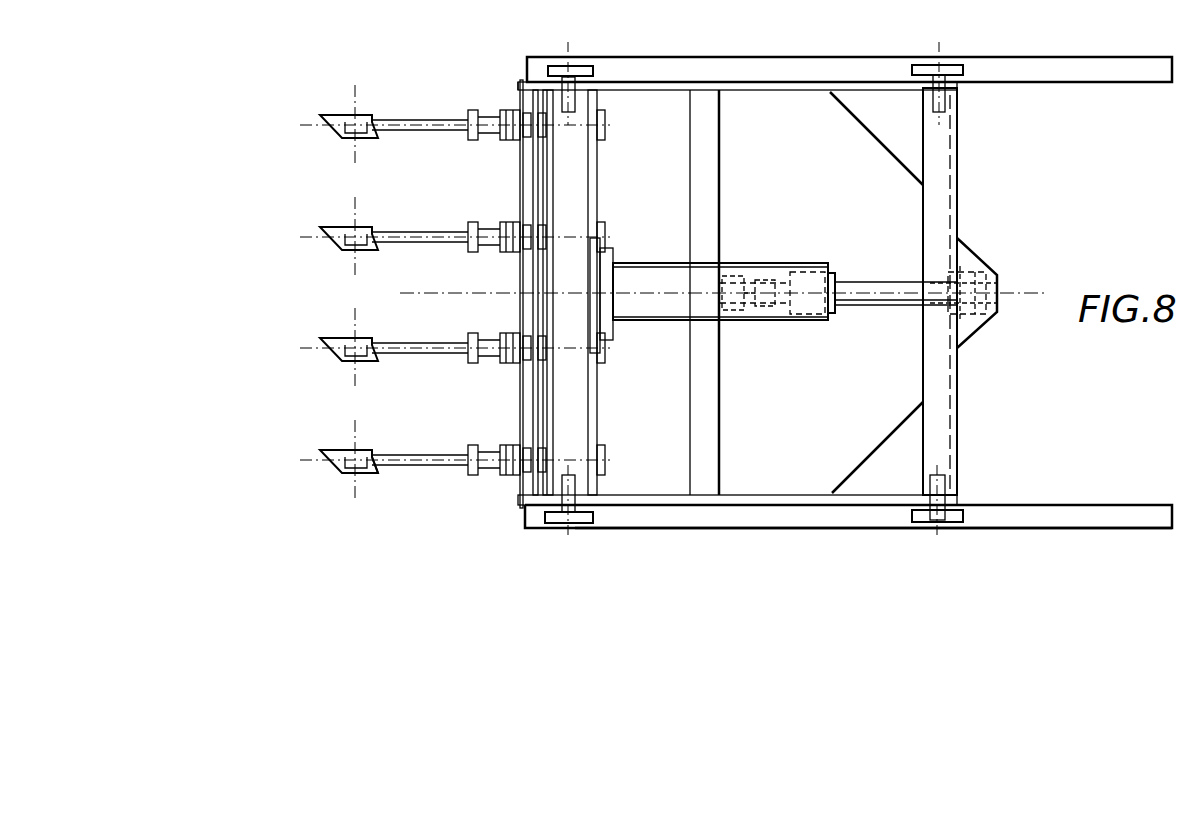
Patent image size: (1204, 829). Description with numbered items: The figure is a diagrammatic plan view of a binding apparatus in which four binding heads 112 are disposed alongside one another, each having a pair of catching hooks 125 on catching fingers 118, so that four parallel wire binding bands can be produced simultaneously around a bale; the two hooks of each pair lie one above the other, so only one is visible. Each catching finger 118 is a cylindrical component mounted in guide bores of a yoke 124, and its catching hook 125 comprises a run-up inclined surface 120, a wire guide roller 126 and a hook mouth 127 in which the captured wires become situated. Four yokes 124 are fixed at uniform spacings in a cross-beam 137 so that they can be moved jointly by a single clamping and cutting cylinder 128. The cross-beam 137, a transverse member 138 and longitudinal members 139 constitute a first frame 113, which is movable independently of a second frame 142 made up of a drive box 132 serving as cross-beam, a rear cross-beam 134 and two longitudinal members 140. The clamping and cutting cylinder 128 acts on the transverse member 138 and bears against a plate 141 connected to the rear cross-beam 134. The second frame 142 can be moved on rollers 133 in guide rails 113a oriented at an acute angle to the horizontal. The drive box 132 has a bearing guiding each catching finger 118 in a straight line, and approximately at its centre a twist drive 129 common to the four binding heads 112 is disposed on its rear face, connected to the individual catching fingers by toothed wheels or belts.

The binding head 112 is at (567, 163).
The first frame 113 is at (847, 369).
The guide rails 113a is at (1130, 510).
The catching finger 118 is at (420, 430).
The run-up inclined surface 120 is at (296, 493).
The yoke 124 is at (518, 482).
The catching hook 125 is at (391, 353).
The wire guide roller 126 is at (355, 516).
The hook mouth 127 is at (403, 509).
The clamping and cutting cylinder 128 is at (862, 284).
The twist drive 129 is at (653, 272).
The drive box 132 is at (565, 405).
The rollers 133 is at (963, 528).
The rear cross-beam 134 is at (938, 384).
The cross-beam 137 is at (542, 533).
The transverse member 138 is at (745, 480).
The longitudinal members 139 is at (668, 504).
The longitudinal members 140 is at (813, 494).
The plate 141 is at (968, 264).
The second frame 142 is at (943, 176).